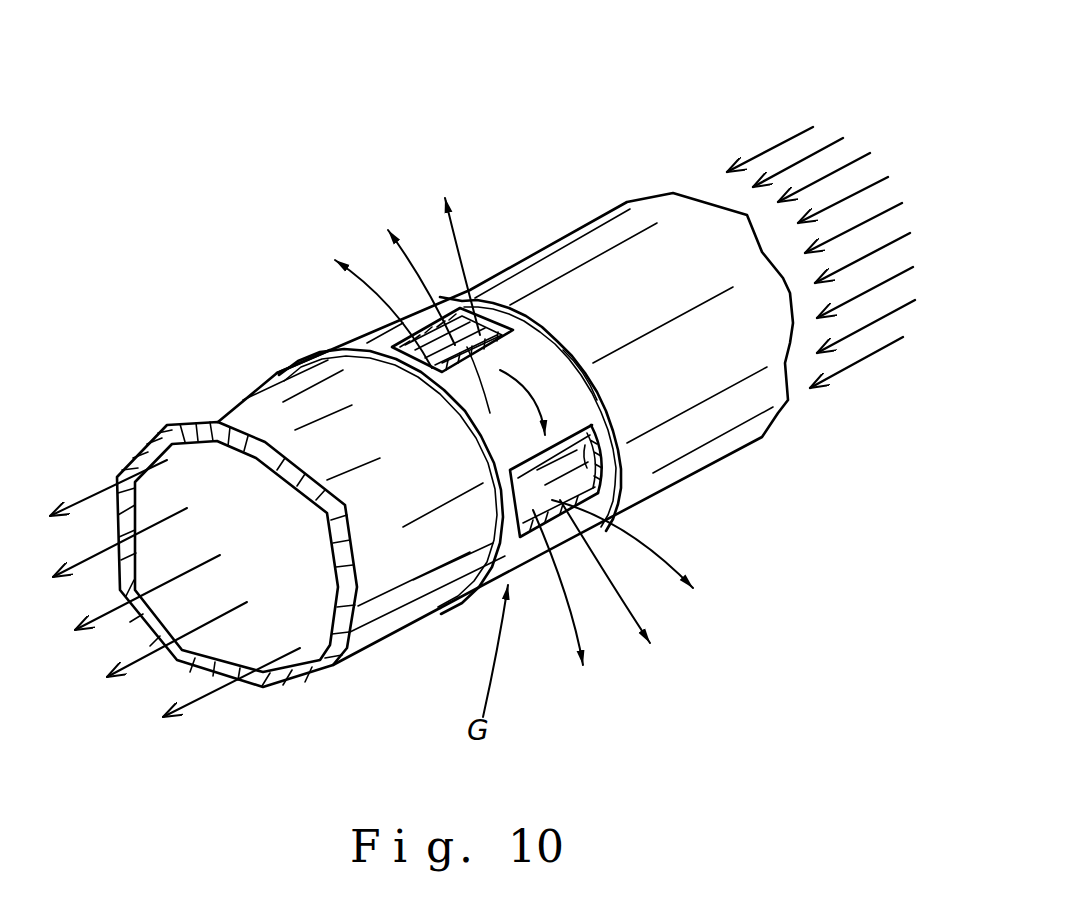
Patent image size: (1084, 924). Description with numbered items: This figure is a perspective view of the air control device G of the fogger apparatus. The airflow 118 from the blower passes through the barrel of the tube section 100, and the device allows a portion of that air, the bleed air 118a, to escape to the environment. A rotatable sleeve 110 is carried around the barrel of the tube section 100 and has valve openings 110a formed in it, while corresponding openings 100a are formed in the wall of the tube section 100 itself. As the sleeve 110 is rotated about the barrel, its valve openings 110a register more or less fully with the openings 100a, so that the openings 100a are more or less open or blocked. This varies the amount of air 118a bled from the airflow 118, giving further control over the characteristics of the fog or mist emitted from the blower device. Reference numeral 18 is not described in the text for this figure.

The air flow 18 is at (780, 143).
The tube section 100 is at (587, 223).
The openings 100a is at (590, 505).
The rotatable sleeve 110 is at (610, 402).
The valve openings 110a is at (605, 417).
The airflow 118 is at (212, 690).
The air 118a is at (423, 279).